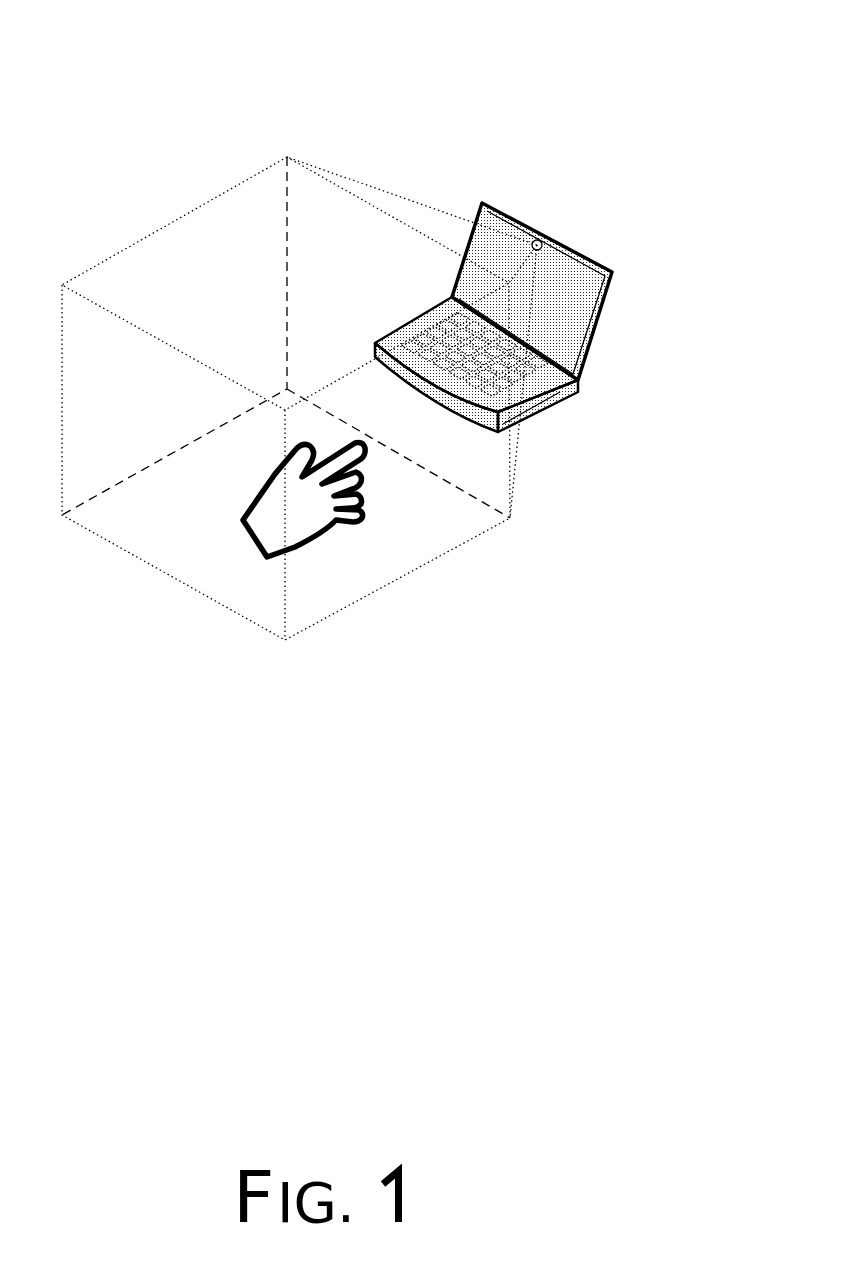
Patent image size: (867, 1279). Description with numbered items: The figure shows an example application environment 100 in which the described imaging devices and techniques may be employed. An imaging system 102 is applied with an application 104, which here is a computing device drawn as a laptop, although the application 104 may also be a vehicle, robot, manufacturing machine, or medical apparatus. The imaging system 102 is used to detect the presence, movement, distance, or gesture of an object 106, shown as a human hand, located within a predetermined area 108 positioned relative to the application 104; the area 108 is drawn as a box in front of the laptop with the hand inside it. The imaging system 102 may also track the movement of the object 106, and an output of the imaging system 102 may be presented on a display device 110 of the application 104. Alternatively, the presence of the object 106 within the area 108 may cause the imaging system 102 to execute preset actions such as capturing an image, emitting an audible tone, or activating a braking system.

The application environment 100 is at (491, 46).
The imaging system 102 is at (495, 337).
The application 104 is at (578, 300).
The object 106 is at (322, 543).
The predetermined area 108 is at (198, 201).
The display device 110 is at (590, 347).